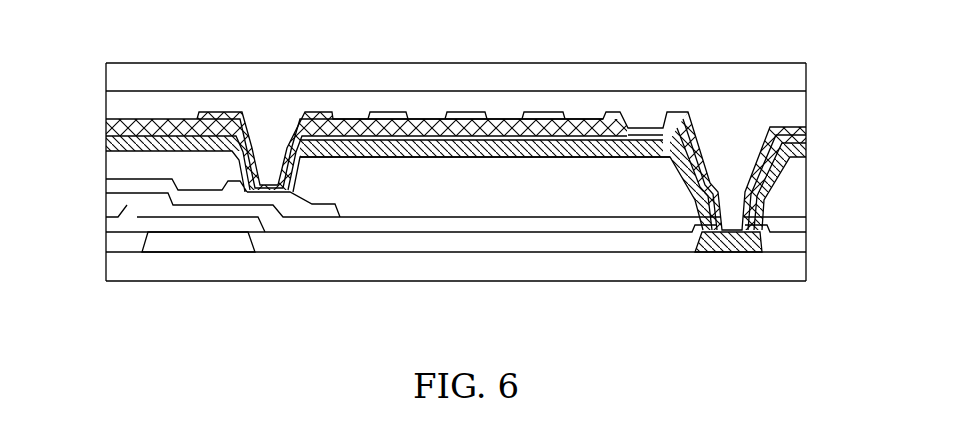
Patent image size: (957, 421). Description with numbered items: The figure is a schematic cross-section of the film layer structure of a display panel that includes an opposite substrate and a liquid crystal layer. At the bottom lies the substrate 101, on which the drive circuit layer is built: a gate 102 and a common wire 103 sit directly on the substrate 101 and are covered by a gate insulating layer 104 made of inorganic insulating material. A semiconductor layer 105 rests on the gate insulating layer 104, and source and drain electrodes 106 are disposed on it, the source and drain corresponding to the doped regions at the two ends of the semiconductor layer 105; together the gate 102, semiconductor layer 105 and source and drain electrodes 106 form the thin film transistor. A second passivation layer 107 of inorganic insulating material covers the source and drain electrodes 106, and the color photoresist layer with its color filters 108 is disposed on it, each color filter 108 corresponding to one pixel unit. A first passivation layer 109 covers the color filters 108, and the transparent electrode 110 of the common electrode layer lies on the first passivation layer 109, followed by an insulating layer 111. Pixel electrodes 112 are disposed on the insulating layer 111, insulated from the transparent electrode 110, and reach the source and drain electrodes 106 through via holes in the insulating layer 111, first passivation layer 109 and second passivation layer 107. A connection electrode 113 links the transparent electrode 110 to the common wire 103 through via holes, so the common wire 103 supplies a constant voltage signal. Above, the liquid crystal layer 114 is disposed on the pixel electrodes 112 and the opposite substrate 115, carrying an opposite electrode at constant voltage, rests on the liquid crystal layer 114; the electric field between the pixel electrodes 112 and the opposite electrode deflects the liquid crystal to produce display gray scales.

The substrate 101 is at (806, 268).
The gate 102 is at (198, 248).
The common wire 103 is at (735, 252).
The gate insulating layer 104 is at (806, 241).
The semiconductor layer 105 is at (322, 223).
The source and drain electrodes 106 is at (116, 210).
The second passivation layer 107 is at (806, 225).
The color filter 108 is at (806, 195).
The first passivation layer 109 is at (806, 152).
The transparent electrode 110 is at (590, 119).
The insulating layer 111 is at (806, 140).
The pixel electrodes 112 is at (317, 112).
The connection electrode 113 is at (806, 125).
The liquid crystal layer 114 is at (806, 105).
The opposite substrate 115 is at (806, 76).